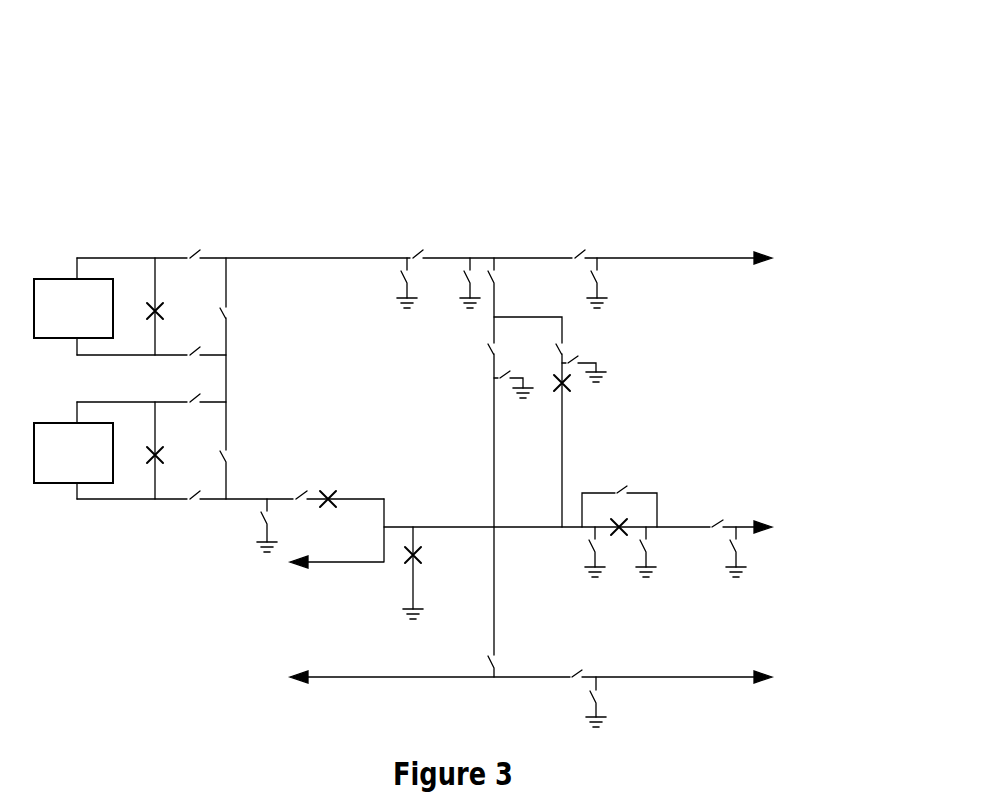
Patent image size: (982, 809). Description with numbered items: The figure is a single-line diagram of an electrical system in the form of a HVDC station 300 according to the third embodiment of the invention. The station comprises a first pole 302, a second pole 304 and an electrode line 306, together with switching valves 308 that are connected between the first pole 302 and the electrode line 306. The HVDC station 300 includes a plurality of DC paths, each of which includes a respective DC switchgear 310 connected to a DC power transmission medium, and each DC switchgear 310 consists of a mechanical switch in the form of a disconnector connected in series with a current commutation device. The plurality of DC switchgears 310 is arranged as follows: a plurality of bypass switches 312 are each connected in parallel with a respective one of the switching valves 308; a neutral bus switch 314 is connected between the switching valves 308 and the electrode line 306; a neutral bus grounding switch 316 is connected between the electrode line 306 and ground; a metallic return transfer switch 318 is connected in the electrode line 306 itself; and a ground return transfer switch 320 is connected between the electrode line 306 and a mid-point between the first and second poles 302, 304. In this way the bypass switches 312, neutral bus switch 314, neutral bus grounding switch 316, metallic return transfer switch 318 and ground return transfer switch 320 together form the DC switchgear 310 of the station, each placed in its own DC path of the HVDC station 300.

The HVDC station 300 is at (262, 212).
The first pole 302 is at (437, 233).
The second pole 304 is at (547, 701).
The electrode line 306 is at (605, 554).
The switching valves 308 is at (73, 381).
The DC switchgear 310 is at (492, 470).
The bypass switches 312 is at (182, 443).
The neutral bus switch 314 is at (338, 478).
The neutral bus grounding switch 316 is at (427, 568).
The metallic return transfer switch 318 is at (637, 503).
The ground return transfer switch 320 is at (578, 393).